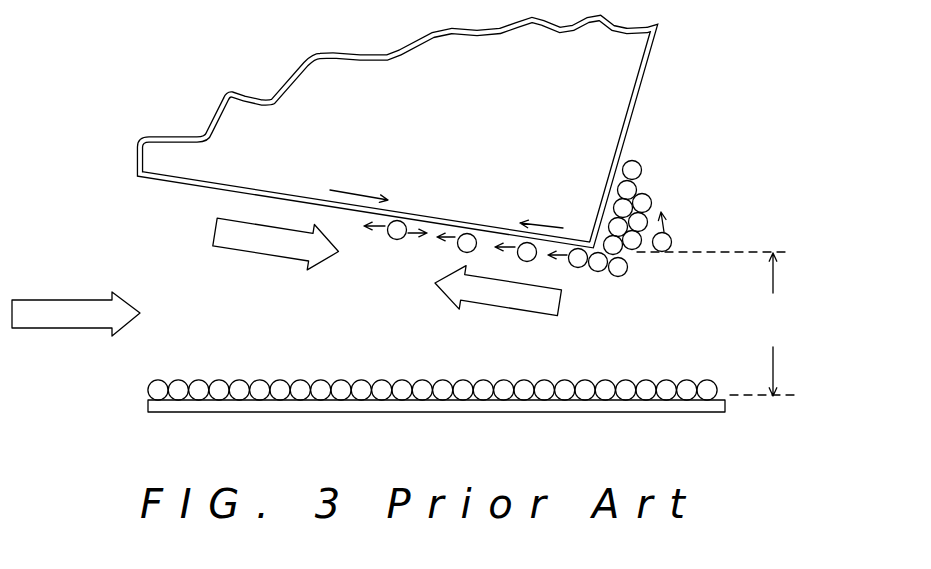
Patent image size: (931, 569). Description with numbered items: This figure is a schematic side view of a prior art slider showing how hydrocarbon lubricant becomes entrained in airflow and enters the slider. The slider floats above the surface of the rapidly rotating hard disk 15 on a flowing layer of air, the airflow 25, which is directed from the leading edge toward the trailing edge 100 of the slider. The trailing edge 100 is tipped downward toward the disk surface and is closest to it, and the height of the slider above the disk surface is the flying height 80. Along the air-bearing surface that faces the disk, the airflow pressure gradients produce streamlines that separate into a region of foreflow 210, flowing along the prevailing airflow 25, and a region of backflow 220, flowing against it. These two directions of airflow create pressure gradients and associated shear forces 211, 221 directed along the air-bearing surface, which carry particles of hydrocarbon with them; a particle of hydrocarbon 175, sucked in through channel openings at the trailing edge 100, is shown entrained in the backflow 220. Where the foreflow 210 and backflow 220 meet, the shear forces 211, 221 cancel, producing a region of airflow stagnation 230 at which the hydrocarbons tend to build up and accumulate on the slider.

The trailing edge 100 is at (653, 43).
The shear force 211 is at (386, 199).
The shear force 221 is at (527, 214).
The airflow 25 is at (40, 299).
The foreflow 210 is at (263, 257).
The backflow 220 is at (540, 320).
The airflow stagnation region 230 is at (393, 240).
The particle of hydrocarbon 175 is at (463, 251).
The flying height 80 is at (778, 347).
The hard disk 15 is at (712, 405).